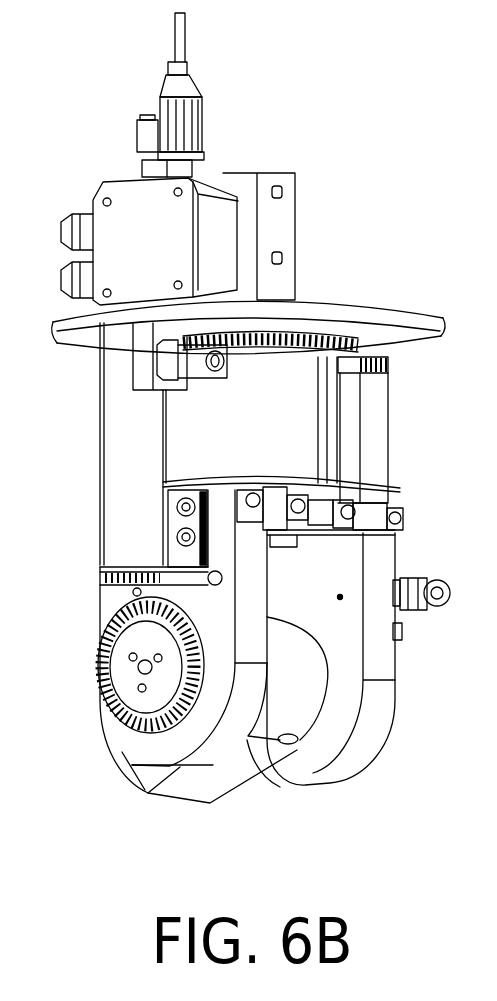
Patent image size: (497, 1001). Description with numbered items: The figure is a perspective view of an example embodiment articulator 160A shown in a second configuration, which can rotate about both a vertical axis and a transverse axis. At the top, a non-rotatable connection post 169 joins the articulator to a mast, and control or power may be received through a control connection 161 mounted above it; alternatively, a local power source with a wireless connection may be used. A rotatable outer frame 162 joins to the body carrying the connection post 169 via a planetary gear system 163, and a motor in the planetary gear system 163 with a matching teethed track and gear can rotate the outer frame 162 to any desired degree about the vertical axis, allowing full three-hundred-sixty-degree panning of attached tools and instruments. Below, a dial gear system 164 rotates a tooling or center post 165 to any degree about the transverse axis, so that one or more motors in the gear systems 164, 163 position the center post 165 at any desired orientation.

The articulator 160A is at (446, 53).
The control connection 161 is at (188, 66).
The connection post 169 is at (270, 221).
The planetary gear system 163 is at (364, 363).
The rotatable outer frame 162 is at (350, 462).
The dial gear system 164 is at (113, 610).
The center post 165 is at (245, 762).